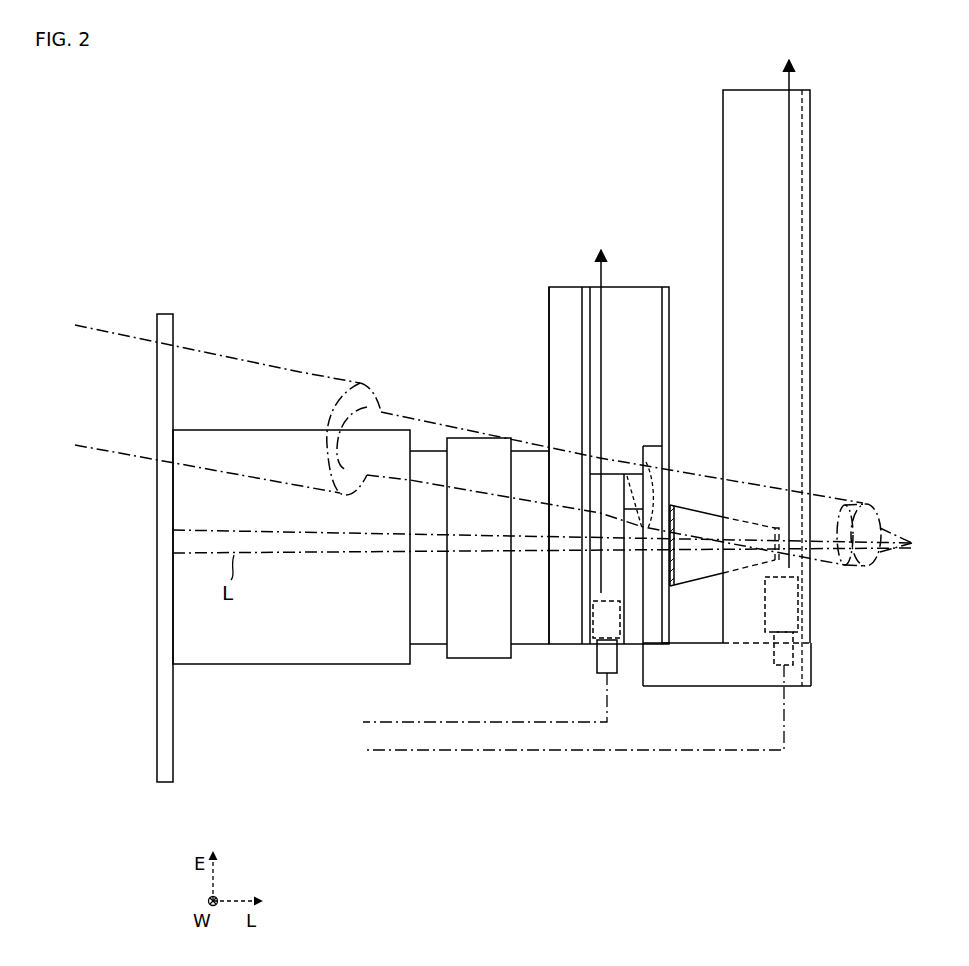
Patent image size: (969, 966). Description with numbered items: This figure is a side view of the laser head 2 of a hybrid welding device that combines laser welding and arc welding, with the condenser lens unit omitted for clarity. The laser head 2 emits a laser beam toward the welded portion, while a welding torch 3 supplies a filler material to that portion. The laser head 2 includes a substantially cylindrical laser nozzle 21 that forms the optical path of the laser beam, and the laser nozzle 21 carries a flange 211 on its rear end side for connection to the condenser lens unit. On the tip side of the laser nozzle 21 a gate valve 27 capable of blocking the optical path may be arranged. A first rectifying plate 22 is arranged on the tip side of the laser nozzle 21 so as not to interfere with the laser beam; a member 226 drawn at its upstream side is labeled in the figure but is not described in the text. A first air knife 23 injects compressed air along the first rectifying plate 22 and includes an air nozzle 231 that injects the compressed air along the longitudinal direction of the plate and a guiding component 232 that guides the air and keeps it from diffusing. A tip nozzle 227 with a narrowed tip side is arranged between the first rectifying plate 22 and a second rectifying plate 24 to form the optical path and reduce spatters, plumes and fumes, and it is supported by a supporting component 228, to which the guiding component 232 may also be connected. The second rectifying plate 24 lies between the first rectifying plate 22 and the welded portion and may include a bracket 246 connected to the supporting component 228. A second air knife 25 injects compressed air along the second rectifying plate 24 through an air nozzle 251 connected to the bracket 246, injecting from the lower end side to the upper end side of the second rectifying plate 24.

The laser head 2 is at (232, 240).
The welding torch 3 is at (849, 503).
The laser nozzle 21 is at (285, 664).
The flange 211 is at (173, 745).
The first rectifying plate 22 is at (643, 287).
The collimating lens 226 is at (549, 328).
The tip nozzle 227 is at (694, 512).
The supporting component 228 is at (650, 446).
The first air knife 23 is at (585, 652).
The air nozzle 231 is at (593, 615).
The guiding component 232 is at (616, 474).
The second rectifying plate 24 is at (735, 90).
The bracket 246 is at (700, 686).
The second air knife 25 is at (754, 632).
The air nozzle 251 is at (765, 605).
The gate valve 27 is at (482, 658).